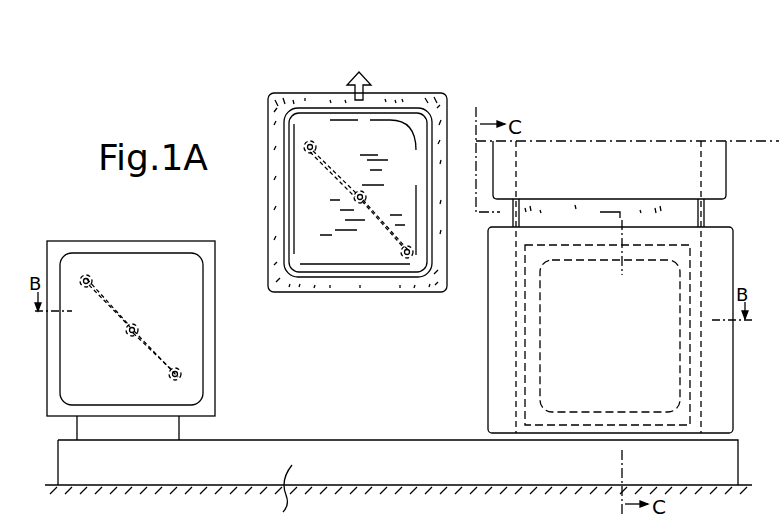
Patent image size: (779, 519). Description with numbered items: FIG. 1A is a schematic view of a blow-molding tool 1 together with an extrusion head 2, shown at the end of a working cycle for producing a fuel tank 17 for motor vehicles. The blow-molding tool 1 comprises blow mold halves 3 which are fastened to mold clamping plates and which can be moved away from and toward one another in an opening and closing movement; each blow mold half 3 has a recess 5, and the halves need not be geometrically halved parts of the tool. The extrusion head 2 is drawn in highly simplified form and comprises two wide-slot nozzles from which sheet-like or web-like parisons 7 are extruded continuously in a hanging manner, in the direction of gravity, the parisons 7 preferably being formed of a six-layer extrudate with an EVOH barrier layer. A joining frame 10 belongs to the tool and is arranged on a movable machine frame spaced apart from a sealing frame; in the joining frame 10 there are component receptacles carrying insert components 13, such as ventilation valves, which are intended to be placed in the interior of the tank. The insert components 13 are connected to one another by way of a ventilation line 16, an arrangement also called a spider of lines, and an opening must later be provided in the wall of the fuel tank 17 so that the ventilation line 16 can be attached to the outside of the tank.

The blow-molding tool 1 is at (378, 490).
The extrusion head 2 is at (672, 160).
The blow mold halves 3 is at (722, 403).
The recess 5 is at (622, 356).
The parisons 7 is at (678, 215).
The joining frame 10 is at (215, 355).
The insert components 13 is at (312, 145).
The ventilation line 16 is at (380, 222).
The fuel tank 17 is at (295, 157).